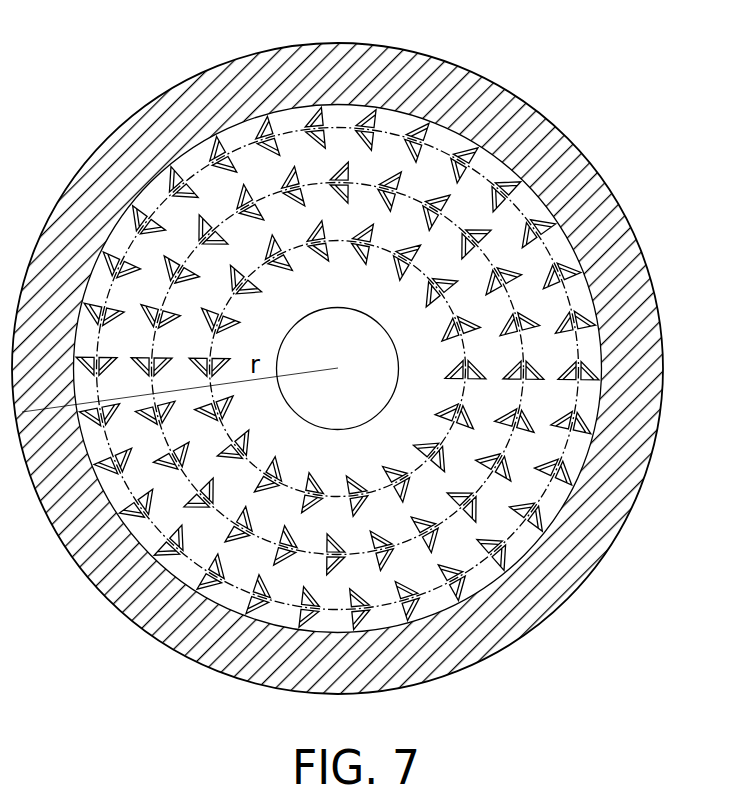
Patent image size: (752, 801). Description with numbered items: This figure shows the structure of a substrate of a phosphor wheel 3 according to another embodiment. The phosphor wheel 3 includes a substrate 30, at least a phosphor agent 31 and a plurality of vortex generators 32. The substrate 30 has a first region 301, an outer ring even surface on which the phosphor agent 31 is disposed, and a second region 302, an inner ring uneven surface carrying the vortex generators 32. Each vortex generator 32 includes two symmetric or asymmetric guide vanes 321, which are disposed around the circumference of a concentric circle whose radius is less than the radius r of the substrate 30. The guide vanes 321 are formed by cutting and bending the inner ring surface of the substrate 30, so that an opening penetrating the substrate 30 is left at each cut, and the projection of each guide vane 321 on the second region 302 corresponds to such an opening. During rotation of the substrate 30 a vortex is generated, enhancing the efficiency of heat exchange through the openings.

The phosphor wheel 3 is at (712, 650).
The substrate 30 is at (513, 671).
The first region 301 is at (520, 610).
The second region 302 is at (379, 332).
The phosphor agent 31 is at (338, 433).
The vortex generator 32 is at (547, 517).
The guide vane 321 is at (550, 533).